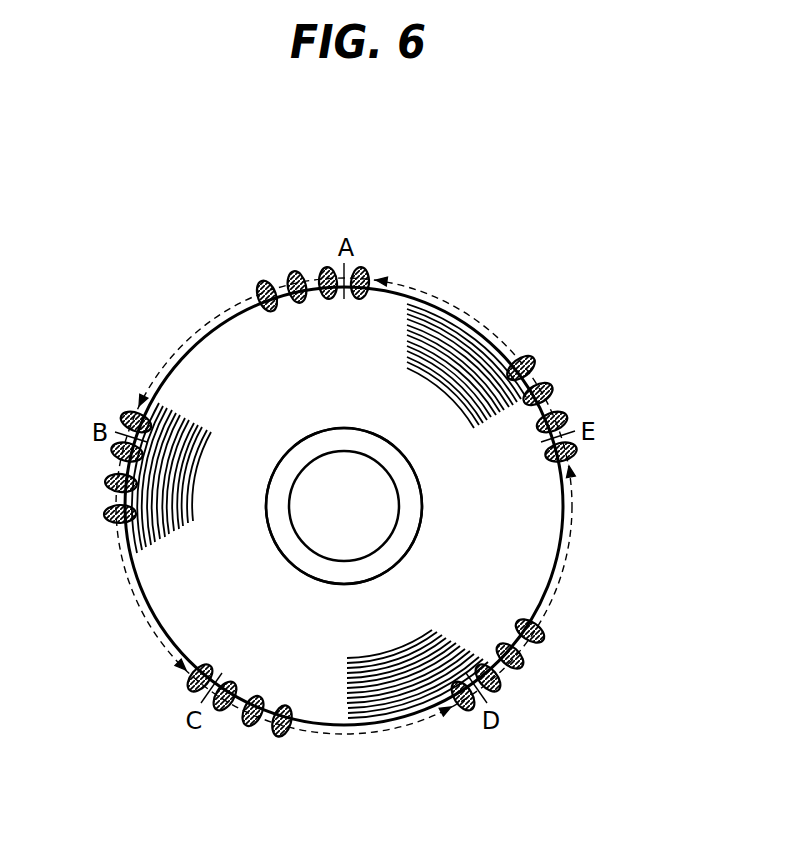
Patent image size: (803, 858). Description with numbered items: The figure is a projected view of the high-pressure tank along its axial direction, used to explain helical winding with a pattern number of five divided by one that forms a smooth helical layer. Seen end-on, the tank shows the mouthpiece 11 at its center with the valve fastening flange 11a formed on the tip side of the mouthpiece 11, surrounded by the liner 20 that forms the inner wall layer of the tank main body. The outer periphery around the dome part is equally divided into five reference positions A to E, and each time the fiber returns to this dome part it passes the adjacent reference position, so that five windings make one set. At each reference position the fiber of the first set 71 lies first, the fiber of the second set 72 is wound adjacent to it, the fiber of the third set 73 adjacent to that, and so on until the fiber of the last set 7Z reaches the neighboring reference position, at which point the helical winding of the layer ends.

The liner 20 is at (535, 505).
The mouthpiece 11 is at (312, 566).
The valve fastening flange 11a is at (393, 506).
The fiber of the first set 71 is at (328, 275).
The fiber of the second set 72 is at (296, 278).
The fiber of the third set 73 is at (264, 288).
The fiber of the last set 7Z is at (360, 275).